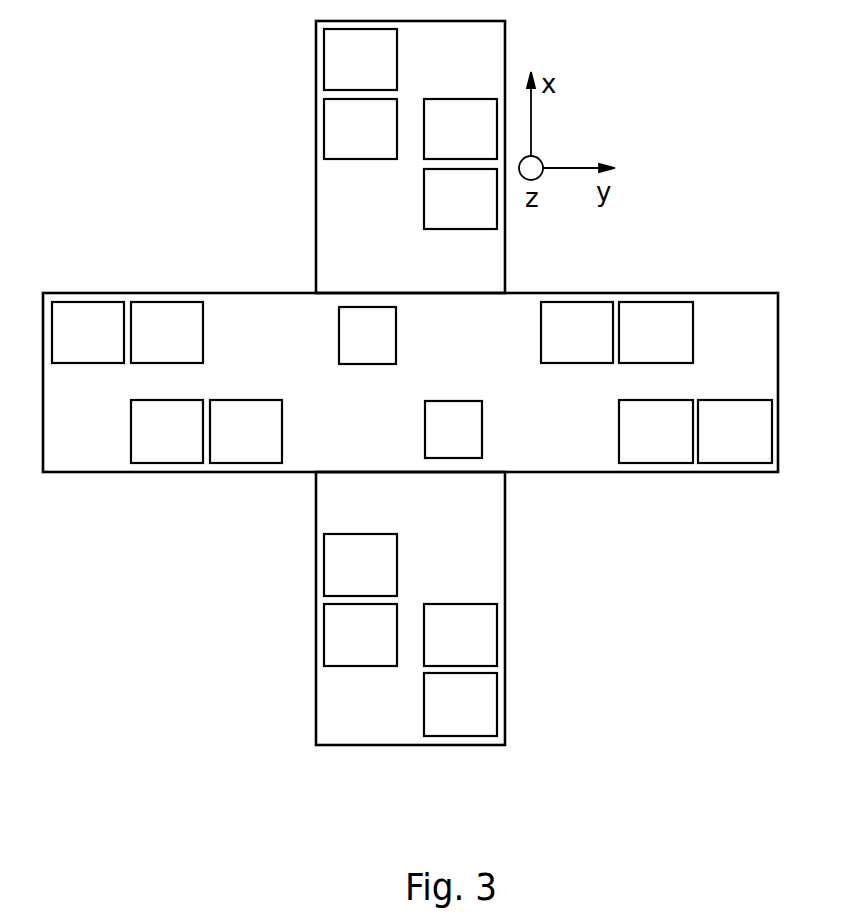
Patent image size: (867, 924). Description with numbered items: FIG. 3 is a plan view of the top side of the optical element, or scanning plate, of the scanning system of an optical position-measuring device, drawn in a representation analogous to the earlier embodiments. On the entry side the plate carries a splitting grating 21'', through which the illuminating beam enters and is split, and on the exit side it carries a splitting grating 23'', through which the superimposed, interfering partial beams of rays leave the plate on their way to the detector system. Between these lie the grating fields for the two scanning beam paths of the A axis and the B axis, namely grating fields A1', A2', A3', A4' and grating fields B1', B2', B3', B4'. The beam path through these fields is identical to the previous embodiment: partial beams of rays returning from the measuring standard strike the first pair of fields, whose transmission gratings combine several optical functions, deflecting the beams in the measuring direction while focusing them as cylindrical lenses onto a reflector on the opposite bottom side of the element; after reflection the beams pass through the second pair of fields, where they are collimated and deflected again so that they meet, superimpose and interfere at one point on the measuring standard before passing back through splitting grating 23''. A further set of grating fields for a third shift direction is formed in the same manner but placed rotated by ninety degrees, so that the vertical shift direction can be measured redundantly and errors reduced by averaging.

The splitting grating 21'' is at (510, 467).
The splitting grating 23'' is at (316, 295).
The grating field B3' is at (88, 332).
The grating field A3' is at (167, 332).
The grating field B1' is at (167, 431).
The grating field A1' is at (246, 431).
The grating field B4' is at (577, 332).
The grating field A4' is at (656, 332).
The grating field B2' is at (656, 431).
The grating field A2' is at (735, 431).